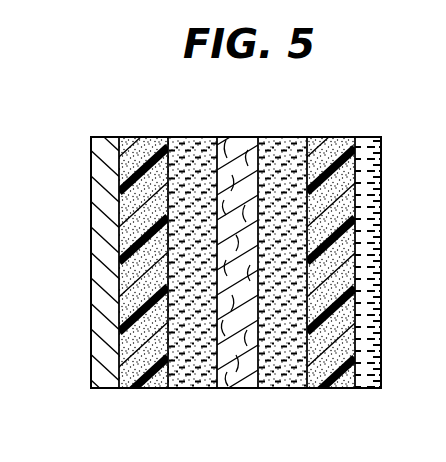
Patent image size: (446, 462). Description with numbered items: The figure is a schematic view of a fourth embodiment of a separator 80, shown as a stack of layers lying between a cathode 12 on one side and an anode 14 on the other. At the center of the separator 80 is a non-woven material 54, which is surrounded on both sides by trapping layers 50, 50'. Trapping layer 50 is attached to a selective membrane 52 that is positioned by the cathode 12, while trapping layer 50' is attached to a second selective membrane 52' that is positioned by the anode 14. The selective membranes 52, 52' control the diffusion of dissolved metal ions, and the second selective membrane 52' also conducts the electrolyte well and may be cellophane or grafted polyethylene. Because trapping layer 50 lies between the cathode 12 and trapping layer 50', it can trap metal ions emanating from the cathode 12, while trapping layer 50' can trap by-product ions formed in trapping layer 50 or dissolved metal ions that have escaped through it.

The separator 80 is at (75, 172).
The cathode 12 is at (97, 276).
The anode 14 is at (373, 247).
The selective membrane 52 is at (143, 239).
The second selective membrane 52' is at (335, 240).
The trapping layer 50 is at (192, 291).
The trapping layer 50' is at (282, 291).
The non-woven material 54 is at (238, 138).